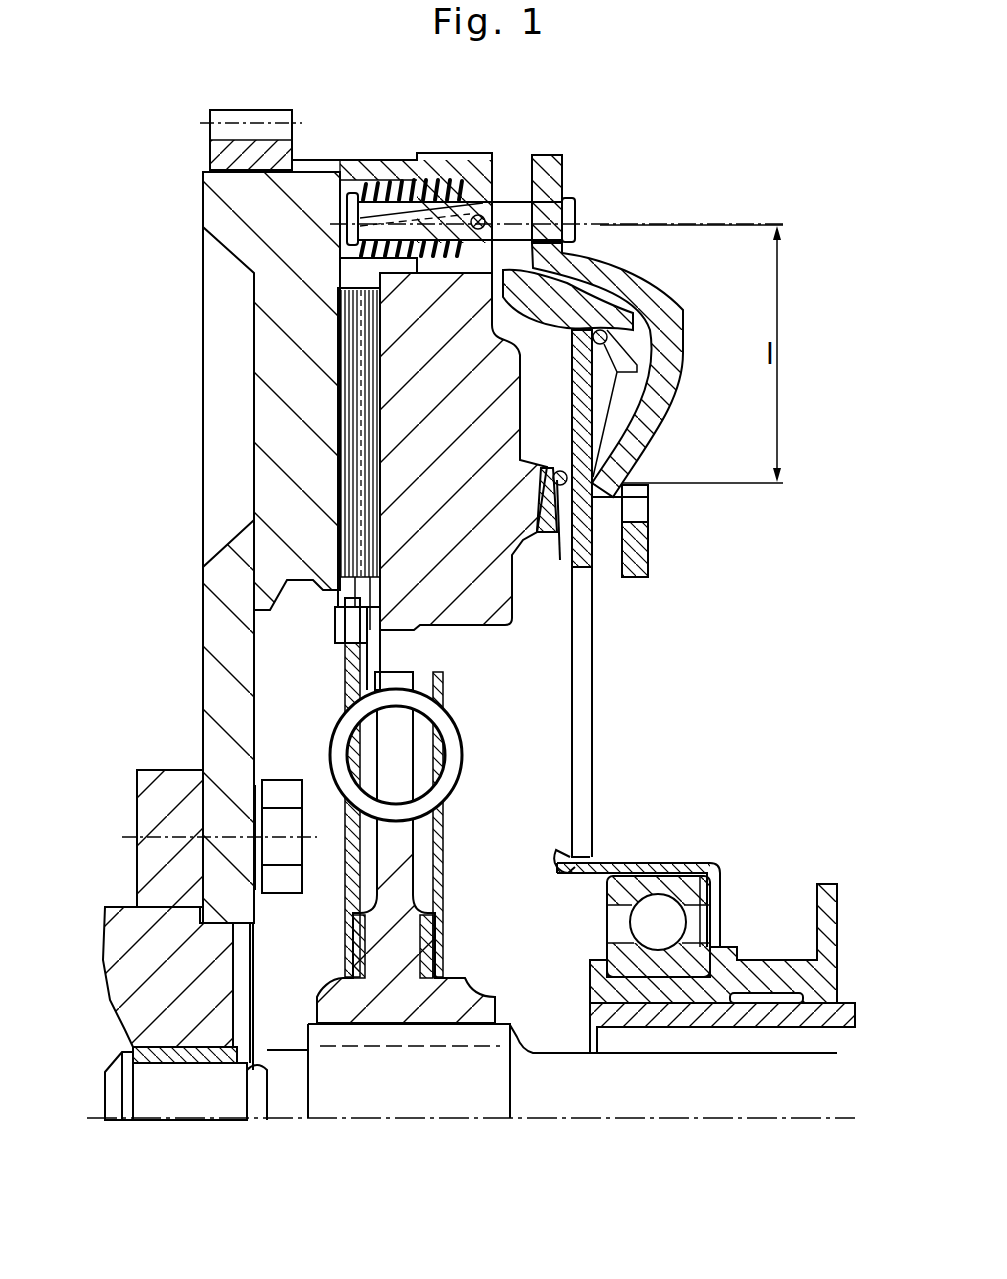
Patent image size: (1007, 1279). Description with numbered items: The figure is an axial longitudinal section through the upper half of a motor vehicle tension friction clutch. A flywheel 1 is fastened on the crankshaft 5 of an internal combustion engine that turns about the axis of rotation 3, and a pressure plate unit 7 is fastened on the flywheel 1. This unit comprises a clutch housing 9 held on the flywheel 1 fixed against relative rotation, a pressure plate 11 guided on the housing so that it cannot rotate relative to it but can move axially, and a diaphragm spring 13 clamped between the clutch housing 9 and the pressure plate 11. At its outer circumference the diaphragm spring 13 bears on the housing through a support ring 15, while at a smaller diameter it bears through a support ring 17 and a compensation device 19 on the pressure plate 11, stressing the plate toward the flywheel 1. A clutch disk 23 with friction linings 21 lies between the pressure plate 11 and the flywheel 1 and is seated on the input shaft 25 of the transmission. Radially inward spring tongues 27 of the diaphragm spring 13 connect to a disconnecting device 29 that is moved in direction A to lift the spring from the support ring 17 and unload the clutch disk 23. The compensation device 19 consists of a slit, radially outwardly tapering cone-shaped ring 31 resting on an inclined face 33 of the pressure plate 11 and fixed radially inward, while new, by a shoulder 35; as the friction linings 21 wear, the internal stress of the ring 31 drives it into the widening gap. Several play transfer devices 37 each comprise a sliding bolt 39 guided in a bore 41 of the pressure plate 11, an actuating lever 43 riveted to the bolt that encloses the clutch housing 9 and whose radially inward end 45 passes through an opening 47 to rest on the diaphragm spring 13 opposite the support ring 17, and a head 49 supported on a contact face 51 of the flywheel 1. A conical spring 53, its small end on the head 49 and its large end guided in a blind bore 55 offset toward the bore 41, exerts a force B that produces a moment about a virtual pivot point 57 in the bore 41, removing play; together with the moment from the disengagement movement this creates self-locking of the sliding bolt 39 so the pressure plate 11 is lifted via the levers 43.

The flywheel 1 is at (238, 200).
The axis of rotation 3 is at (410, 1128).
The crankshaft 5 is at (157, 805).
The pressure plate unit 7 is at (716, 105).
The clutch housing 9 is at (635, 568).
The pressure plate 11 is at (488, 590).
The diaphragm spring 13 is at (587, 412).
The support ring 15 is at (647, 313).
The support ring 17 is at (560, 470).
The compensation device 19 is at (470, 472).
The friction linings 21 is at (372, 400).
The clutch disk 23 is at (340, 665).
The input shaft 25 is at (662, 1090).
The spring tongues 27 is at (582, 770).
The disconnecting device 29 is at (705, 856).
The cone-shaped ring 31 is at (630, 507).
The inclined face 33 is at (556, 520).
The shoulder 35 is at (550, 537).
The play transfer devices 37 is at (632, 256).
The sliding bolt 39 is at (528, 203).
The bore 41 is at (472, 195).
The actuating lever 43 is at (710, 341).
The radially inward pointing end 45 is at (674, 448).
The opening 47 is at (702, 504).
The head 49 is at (353, 193).
The contact face 51 is at (347, 175).
The conical spring 53 is at (395, 180).
The blind bore 55 is at (437, 266).
The virtual pivot point 57 is at (520, 207).
The direction of disconnecting device movement A is at (822, 847).
The force B is at (317, 157).